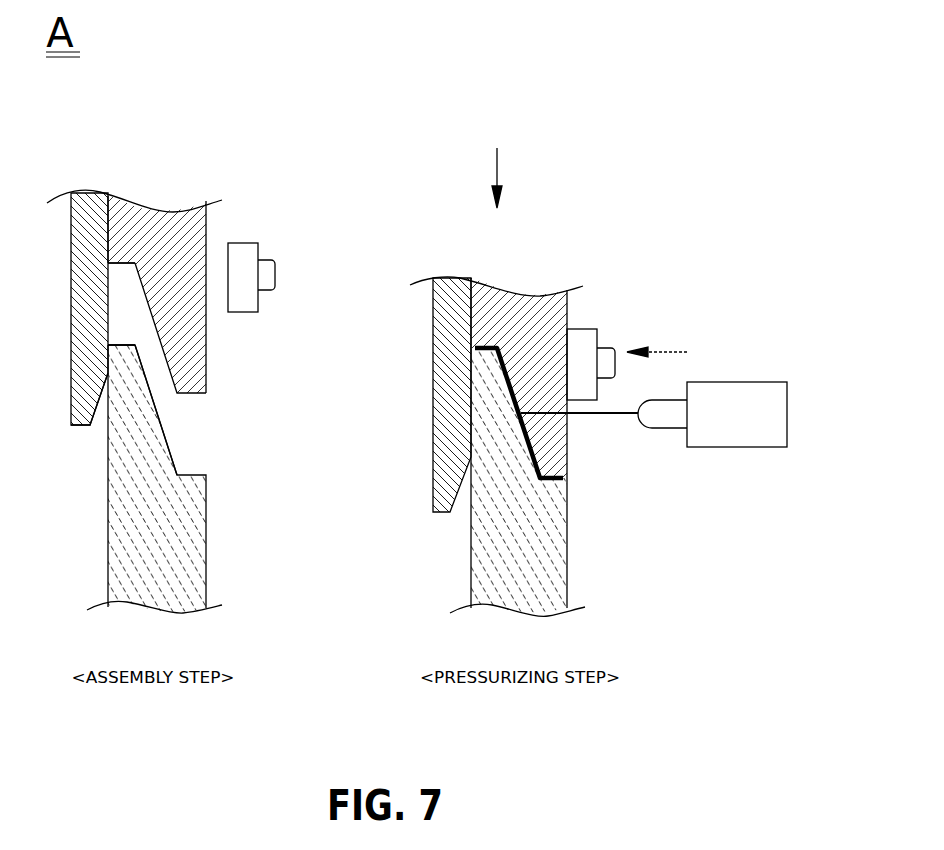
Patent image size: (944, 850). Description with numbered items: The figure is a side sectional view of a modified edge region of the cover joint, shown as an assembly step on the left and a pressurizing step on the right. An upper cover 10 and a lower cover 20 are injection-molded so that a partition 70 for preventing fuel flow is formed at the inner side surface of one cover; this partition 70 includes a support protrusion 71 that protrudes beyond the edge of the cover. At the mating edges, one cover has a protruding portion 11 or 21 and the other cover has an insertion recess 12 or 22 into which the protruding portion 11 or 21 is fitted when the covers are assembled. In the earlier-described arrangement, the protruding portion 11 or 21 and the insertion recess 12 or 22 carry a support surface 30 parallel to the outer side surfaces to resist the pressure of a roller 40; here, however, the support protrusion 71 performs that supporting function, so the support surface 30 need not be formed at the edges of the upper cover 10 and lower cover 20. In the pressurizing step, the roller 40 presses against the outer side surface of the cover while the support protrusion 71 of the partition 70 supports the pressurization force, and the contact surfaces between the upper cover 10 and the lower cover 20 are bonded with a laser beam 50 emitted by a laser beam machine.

The upper cover 10 is at (216, 223).
The protruding portion 11 is at (188, 352).
The insertion recess 12 is at (123, 279).
The lower cover 20 is at (102, 543).
The protruding portion 21 is at (120, 412).
The insertion recess 22 is at (183, 448).
The support surface 30 is at (123, 319).
The roller 40 is at (253, 302).
The laser beam 50 is at (617, 416).
The partition for preventing fuel flow 70 is at (70, 298).
The support protrusion 71 is at (75, 398).